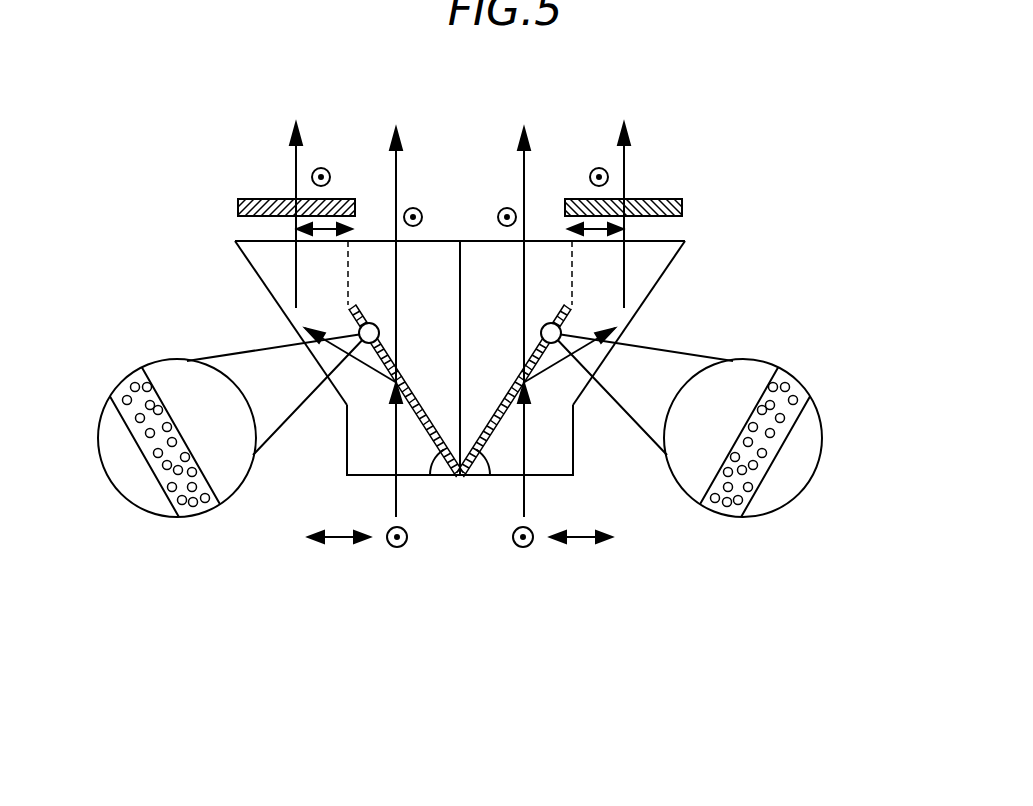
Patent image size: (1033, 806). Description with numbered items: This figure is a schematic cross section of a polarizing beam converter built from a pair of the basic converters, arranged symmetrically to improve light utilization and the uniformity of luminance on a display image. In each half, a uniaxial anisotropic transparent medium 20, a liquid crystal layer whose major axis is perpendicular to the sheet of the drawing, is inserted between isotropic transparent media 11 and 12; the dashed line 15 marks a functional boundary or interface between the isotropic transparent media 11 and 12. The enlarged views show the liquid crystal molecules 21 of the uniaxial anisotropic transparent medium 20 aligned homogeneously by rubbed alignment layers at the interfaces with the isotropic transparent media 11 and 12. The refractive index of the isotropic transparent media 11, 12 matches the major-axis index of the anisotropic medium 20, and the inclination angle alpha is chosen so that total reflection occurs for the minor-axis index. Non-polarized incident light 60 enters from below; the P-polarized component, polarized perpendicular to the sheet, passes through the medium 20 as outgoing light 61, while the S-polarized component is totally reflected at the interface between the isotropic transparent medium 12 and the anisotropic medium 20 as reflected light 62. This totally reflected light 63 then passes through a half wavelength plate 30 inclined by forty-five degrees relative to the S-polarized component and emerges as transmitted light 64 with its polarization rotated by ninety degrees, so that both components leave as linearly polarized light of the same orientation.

The isotropic transparent medium 11 is at (700, 473).
The isotropic transparent medium 12 is at (312, 306).
The dashed line 15 is at (337, 260).
The uniaxial anisotropic transparent medium 20 is at (388, 422).
The liquid crystal molecules 21 is at (127, 400).
The half wavelength plate 30 is at (238, 207).
The incident light 60 is at (396, 492).
The outgoing light 61 is at (396, 193).
The reflected light 62 is at (312, 353).
The totally reflected light 63 is at (295, 273).
The transmitted light 64 is at (296, 195).